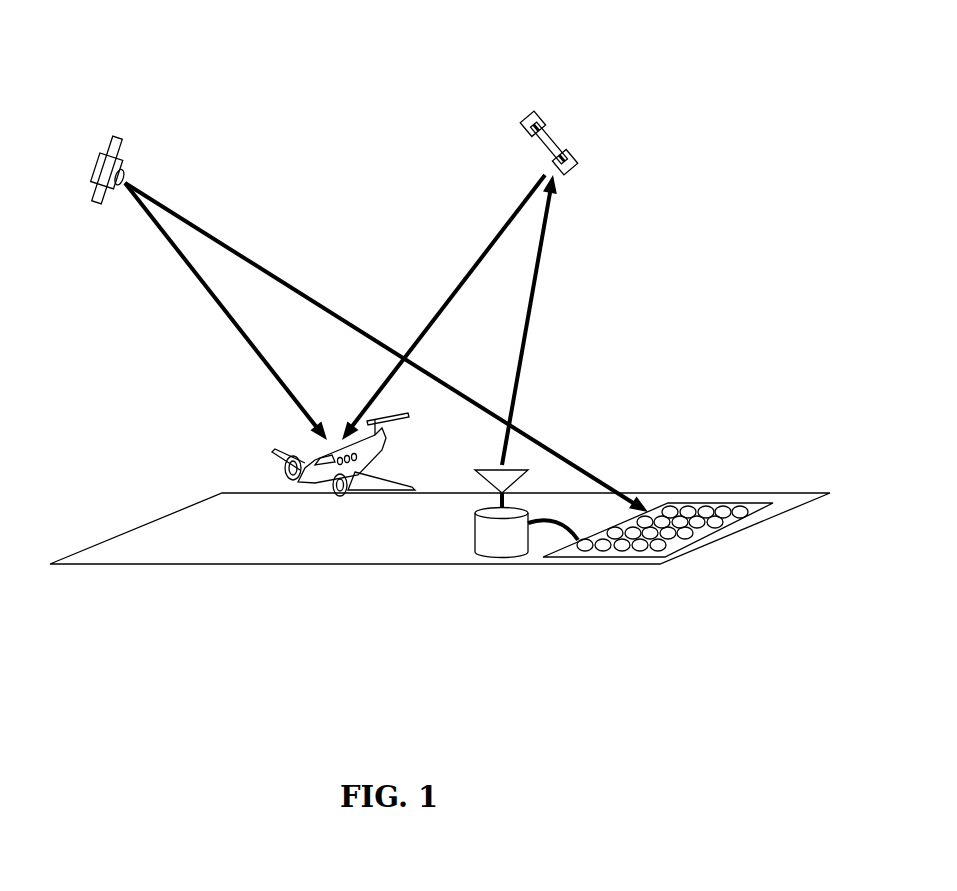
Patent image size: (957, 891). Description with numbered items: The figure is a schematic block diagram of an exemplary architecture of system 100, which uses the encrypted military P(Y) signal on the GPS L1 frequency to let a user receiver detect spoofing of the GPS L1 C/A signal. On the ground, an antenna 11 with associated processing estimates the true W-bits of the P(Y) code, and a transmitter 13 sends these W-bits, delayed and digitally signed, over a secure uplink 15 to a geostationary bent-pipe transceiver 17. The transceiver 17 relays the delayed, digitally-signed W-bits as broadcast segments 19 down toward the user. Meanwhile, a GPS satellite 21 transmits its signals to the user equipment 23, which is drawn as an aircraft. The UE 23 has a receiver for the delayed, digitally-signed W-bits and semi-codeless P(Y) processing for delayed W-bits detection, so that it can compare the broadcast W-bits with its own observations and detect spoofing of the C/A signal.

The system 100 is at (208, 58).
The antenna 11 is at (714, 483).
The transmitter 13 is at (538, 456).
The secure uplink 15 is at (547, 274).
The GEO bent-pipe transceiver 17 is at (578, 133).
The broadcast segments 19 is at (444, 292).
The GPS satellite 21 is at (98, 157).
The UE 23 is at (252, 436).